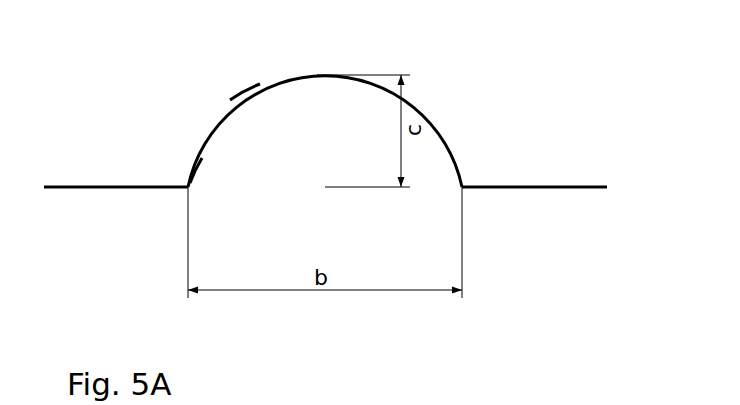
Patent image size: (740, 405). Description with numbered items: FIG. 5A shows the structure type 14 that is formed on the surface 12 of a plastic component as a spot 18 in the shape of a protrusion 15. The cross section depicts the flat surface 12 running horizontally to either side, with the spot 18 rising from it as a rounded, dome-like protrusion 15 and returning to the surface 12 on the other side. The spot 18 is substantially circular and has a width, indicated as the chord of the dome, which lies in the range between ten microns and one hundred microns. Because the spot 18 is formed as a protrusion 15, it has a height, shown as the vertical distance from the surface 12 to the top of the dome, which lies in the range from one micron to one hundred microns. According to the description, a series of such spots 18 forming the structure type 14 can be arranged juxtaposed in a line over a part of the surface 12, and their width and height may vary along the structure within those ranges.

The surface 12 is at (58, 182).
The structure type 14 is at (442, 111).
The protrusion 15 is at (238, 102).
The spot 18 is at (214, 143).